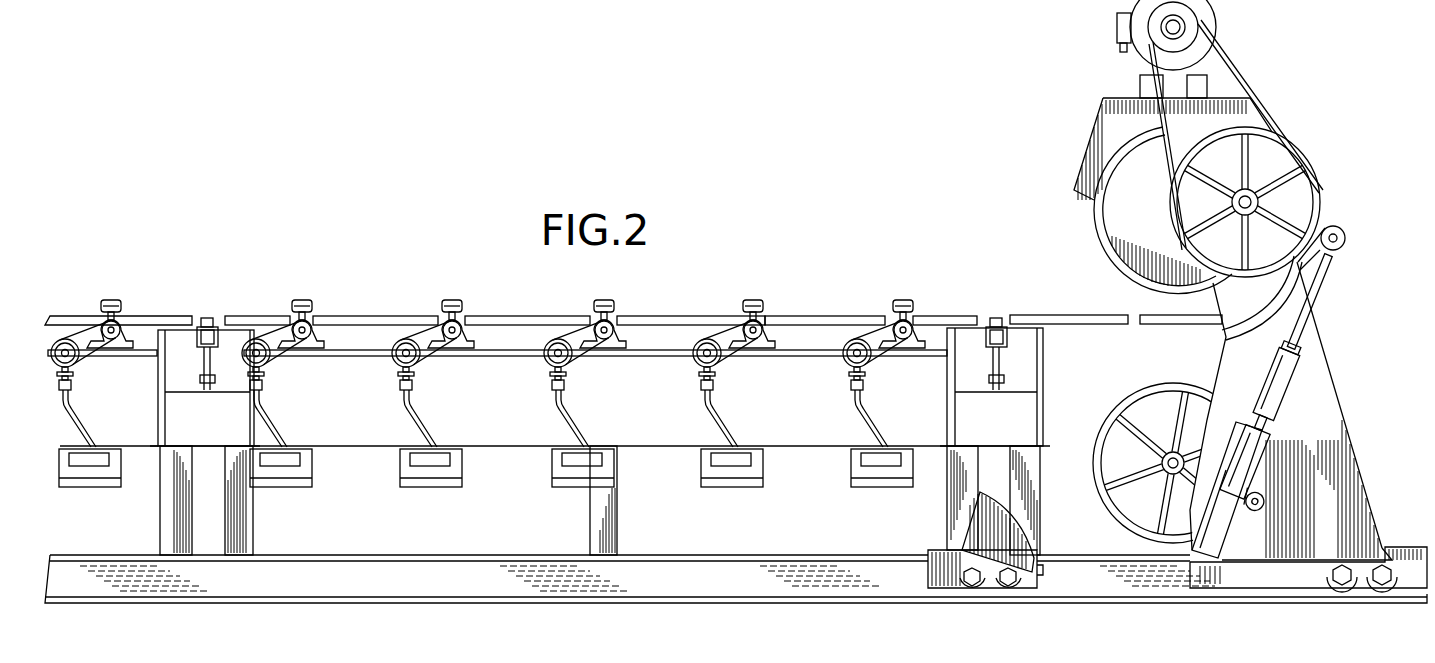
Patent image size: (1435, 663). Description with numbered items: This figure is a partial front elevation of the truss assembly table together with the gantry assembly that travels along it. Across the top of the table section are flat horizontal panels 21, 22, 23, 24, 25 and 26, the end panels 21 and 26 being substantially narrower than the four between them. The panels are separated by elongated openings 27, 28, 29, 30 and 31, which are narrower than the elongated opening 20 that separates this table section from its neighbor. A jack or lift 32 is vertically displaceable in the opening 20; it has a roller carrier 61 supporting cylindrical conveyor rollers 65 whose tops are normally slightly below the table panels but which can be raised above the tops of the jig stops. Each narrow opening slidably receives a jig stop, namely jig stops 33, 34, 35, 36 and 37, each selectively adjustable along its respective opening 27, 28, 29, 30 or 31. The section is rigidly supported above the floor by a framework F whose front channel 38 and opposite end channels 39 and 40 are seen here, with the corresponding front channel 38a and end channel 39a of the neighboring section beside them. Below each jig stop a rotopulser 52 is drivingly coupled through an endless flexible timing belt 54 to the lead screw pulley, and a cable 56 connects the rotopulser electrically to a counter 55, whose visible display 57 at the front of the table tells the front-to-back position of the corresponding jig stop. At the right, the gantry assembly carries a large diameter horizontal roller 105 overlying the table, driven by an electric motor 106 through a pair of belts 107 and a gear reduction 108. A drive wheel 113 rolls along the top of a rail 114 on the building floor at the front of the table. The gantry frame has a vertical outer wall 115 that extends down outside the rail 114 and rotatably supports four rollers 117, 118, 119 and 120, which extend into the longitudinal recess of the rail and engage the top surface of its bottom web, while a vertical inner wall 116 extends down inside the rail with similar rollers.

The elongated opening 20 is at (192, 312).
The flat horizontal panel 21 is at (256, 316).
The flat horizontal panel 22 is at (378, 316).
The flat horizontal panel 23 is at (526, 316).
The flat horizontal panel 24 is at (679, 316).
The flat horizontal panel 25 is at (822, 316).
The flat horizontal panel 26 is at (946, 316).
The elongated opening 27 is at (287, 314).
The elongated opening 28 is at (441, 315).
The elongated opening 29 is at (600, 313).
The elongated opening 30 is at (750, 313).
The elongated opening 31 is at (892, 313).
The jack or lift 32 is at (205, 311).
The jig stop 33 is at (310, 300).
The jig stop 34 is at (457, 300).
The jig stop 35 is at (610, 300).
The jig stop 36 is at (760, 300).
The jig stop 37 is at (900, 300).
The front channel 38 is at (662, 448).
The front channel 38a is at (137, 452).
The end channel 39 is at (248, 422).
The end channel 39a is at (160, 530).
The end channel 40 is at (946, 382).
The rotopulser 52 is at (268, 362).
The endless flexible timing belt 54 is at (570, 338).
The counter 55 is at (292, 490).
The cable 56 is at (82, 425).
The visible display 57 is at (300, 460).
The roller carrier 61 is at (1003, 352).
The conveyor rollers 65 is at (996, 316).
The framework F is at (590, 520).
The horizontal roller 105 is at (1100, 235).
The electric motor 106 is at (1218, 6).
The belts 107 is at (1252, 82).
The gear reduction 108 is at (1135, 172).
The drive wheel 113 is at (1130, 402).
The rail 114 is at (1213, 586).
The vertical outer wall 115 is at (976, 522).
The vertical inner wall 116 is at (1087, 538).
The roller 117 is at (968, 592).
The roller 118 is at (1012, 592).
The roller 119 is at (1340, 592).
The roller 120 is at (1382, 594).